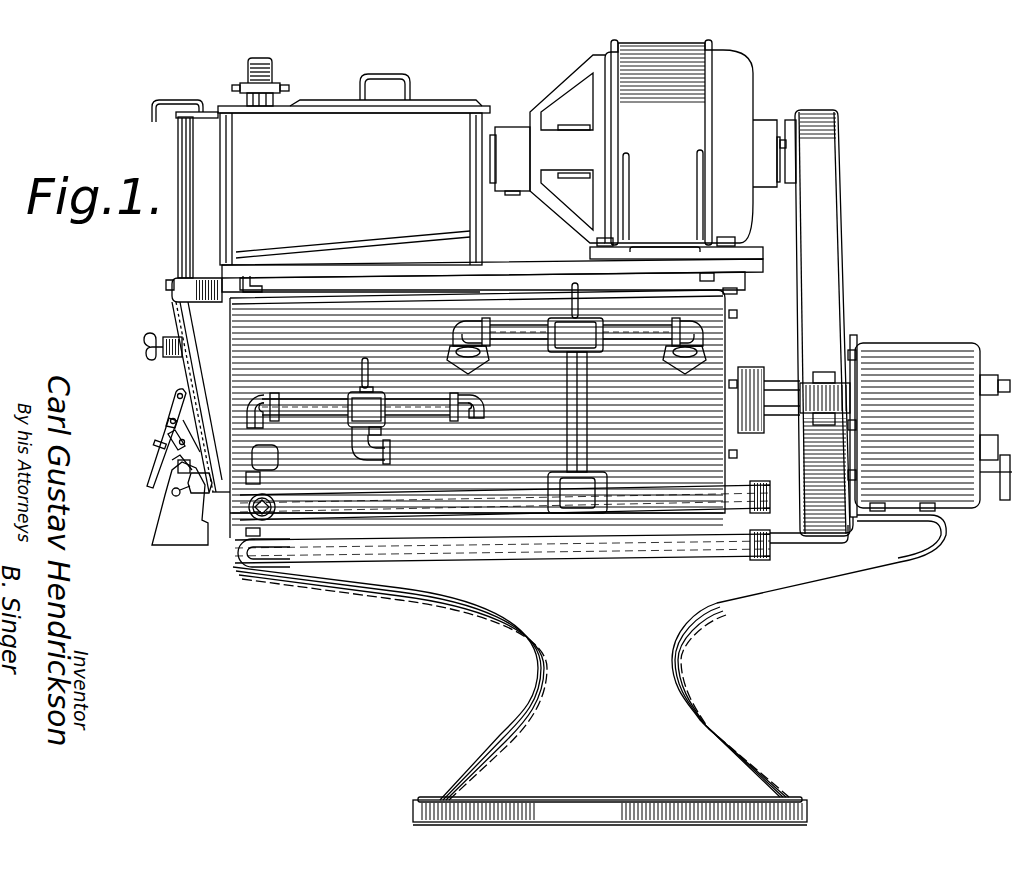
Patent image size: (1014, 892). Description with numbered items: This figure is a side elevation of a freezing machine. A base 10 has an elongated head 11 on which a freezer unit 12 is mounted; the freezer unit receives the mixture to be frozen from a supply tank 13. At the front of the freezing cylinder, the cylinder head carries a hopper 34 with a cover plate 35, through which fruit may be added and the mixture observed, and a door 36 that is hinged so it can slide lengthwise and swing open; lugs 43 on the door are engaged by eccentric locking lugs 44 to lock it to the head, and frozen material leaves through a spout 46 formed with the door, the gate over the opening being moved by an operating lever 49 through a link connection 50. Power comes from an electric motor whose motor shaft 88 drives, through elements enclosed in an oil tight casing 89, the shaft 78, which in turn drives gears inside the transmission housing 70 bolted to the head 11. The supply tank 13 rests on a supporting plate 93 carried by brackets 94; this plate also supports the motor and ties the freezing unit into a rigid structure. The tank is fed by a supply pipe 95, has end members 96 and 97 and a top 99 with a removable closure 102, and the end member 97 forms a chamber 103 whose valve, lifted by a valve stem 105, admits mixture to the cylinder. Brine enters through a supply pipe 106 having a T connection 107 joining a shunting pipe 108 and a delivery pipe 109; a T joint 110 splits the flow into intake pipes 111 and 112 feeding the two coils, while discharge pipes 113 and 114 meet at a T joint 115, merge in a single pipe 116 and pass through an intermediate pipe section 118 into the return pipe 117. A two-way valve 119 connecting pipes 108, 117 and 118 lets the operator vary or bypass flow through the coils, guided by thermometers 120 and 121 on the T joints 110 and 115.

The base 10 is at (690, 716).
The elongated head 11 is at (483, 442).
The freezer unit 12 is at (650, 512).
The supply tank 13 is at (351, 189).
The hopper 34 is at (184, 290).
The cover plate 35 is at (168, 281).
The door 36 is at (178, 368).
The lugs 43 is at (198, 490).
The eccentric locking lugs 44 is at (152, 336).
The spout 46 is at (162, 528).
The operating lever 49 is at (170, 410).
The link connection 50 is at (166, 436).
The housing 70 is at (920, 352).
The shaft 78 is at (768, 376).
The motor shaft 88 is at (789, 138).
The oil tight casing 89 is at (822, 244).
The supporting plate 93 is at (500, 260).
The brackets 94 is at (262, 288).
The supply pipe 95 is at (270, 70).
The end member 96 is at (481, 212).
The end member 97 is at (233, 196).
The top 99 is at (290, 105).
The removable closure 102 is at (420, 100).
The chamber 103 is at (178, 158).
The valve stem 105 is at (190, 100).
The supply pipe 106 is at (758, 483).
The T connection 107 is at (580, 500).
The shunting pipe 108 is at (367, 512).
The delivery pipe 109 is at (589, 386).
The T joint 110 is at (570, 300).
The intake pipe 111 is at (500, 322).
The intake pipe 112 is at (645, 322).
The discharge pipe 113 is at (306, 400).
The discharge pipe 114 is at (406, 399).
The T joint 115 is at (379, 392).
The single pipe 116 is at (464, 400).
The return pipe 117 is at (478, 560).
The intermediate pipe section 118 is at (276, 398).
The two-way valve 119 is at (245, 542).
The thermometer 120 is at (562, 352).
The thermometer 121 is at (366, 360).